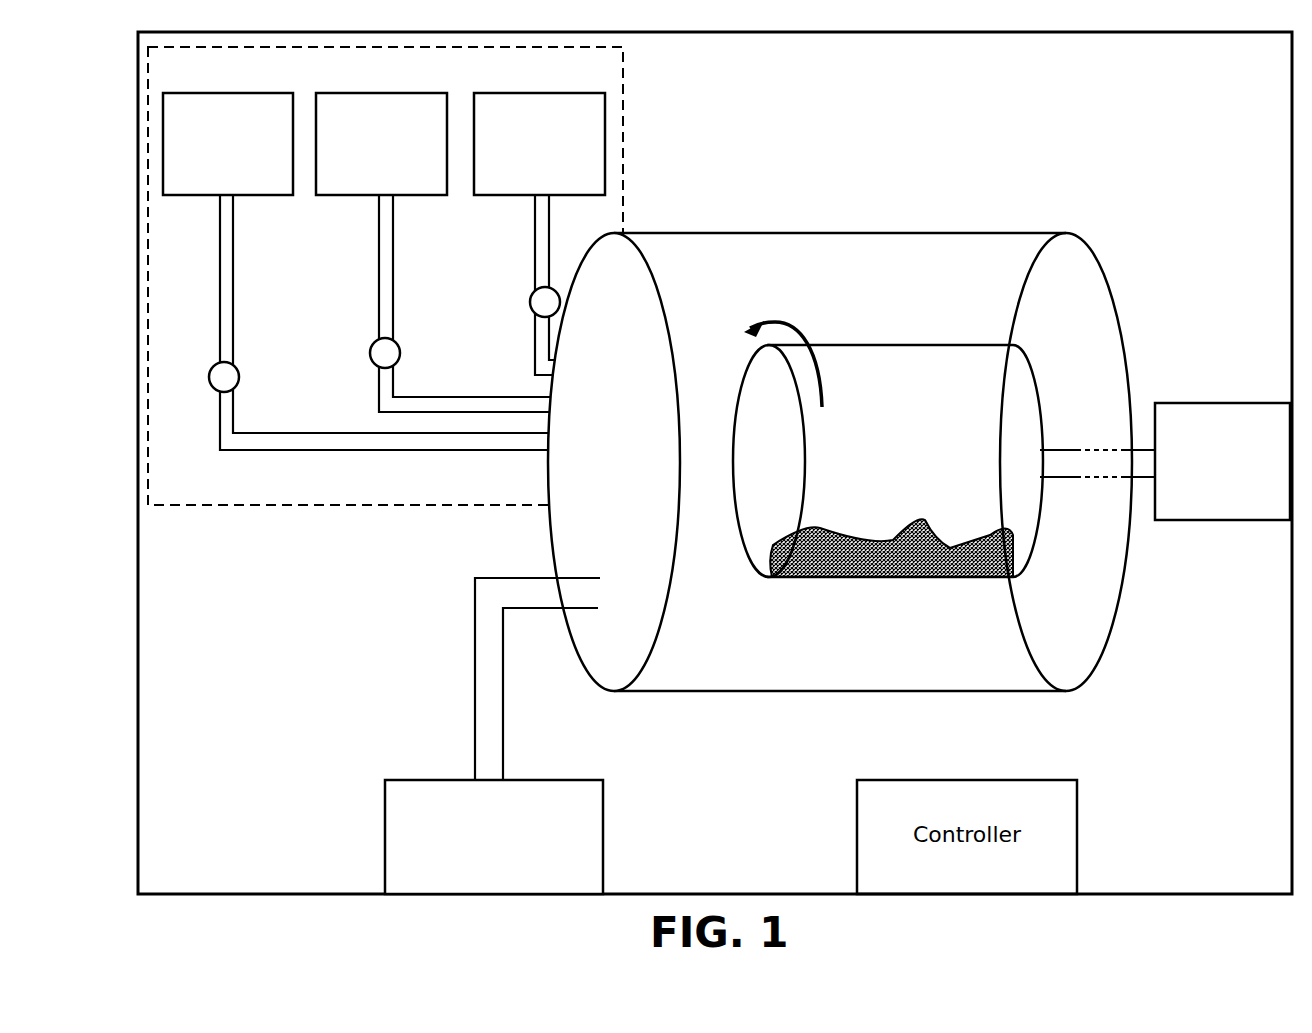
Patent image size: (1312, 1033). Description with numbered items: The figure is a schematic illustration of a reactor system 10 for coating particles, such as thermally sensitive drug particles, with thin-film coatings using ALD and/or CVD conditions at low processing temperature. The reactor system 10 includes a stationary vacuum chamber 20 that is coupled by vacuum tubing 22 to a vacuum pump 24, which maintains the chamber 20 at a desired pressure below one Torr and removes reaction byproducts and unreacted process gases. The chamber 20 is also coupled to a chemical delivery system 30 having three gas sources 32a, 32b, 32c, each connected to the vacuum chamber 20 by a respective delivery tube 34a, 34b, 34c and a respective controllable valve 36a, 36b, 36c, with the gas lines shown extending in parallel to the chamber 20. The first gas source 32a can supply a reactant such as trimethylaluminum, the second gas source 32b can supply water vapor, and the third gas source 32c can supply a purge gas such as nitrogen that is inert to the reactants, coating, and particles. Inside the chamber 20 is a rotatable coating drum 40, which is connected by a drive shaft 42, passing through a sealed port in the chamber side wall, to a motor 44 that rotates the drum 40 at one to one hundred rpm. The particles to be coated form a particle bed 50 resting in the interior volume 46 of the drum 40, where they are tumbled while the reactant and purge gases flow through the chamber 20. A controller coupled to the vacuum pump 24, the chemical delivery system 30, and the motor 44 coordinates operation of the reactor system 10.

The reactor system 10 is at (1117, 190).
The vacuum chamber 20 is at (875, 232).
The vacuum tubing 22 is at (473, 677).
The vacuum pump 24 is at (383, 837).
The chemical delivery system 30 is at (358, 505).
The first gas source 32a is at (202, 93).
The second gas source 32b is at (363, 93).
The third gas source 32c is at (508, 93).
The first delivery tube 34a is at (233, 260).
The second delivery tube 34b is at (393, 265).
The third delivery tube 34c is at (535, 250).
The first controllable valve 36a is at (240, 377).
The second controllable valve 36b is at (400, 352).
The third controllable valve 36c is at (530, 303).
The rotatable coating drum 40 is at (885, 345).
The drive shaft 42 is at (1074, 450).
The motor 44 is at (1244, 403).
The interior volume 46 is at (960, 367).
The particle bed 50 is at (883, 580).